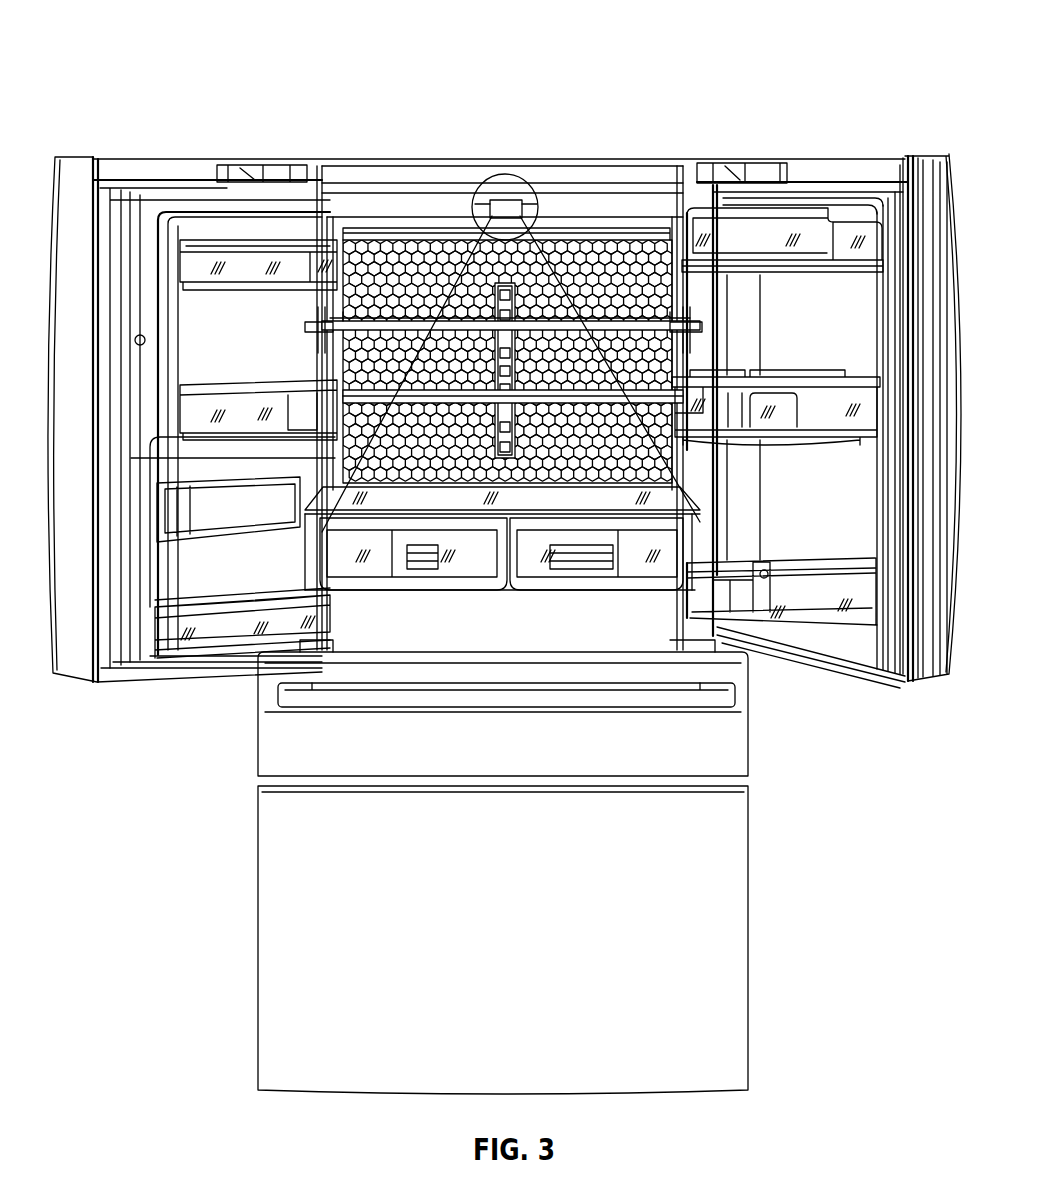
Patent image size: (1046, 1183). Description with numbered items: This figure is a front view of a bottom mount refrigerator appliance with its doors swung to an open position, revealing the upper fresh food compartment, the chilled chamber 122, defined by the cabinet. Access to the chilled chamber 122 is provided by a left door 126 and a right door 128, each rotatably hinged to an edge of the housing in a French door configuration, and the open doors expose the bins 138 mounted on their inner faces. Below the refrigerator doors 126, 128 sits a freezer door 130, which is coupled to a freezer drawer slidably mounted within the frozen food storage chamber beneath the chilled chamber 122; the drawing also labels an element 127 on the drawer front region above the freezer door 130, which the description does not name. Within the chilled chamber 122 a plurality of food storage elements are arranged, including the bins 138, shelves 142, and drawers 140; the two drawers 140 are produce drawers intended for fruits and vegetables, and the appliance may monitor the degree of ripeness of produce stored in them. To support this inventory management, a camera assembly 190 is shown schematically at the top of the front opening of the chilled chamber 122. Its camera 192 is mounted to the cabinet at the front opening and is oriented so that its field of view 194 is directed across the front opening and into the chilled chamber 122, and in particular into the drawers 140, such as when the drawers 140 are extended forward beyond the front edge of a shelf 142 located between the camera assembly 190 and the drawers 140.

The chilled chamber 122 is at (418, 287).
The left door 126 is at (72, 177).
The freezer drawer 127 is at (738, 752).
The right door 128 is at (927, 167).
The freezer door 130 is at (733, 920).
The bins 138 is at (248, 258).
The drawers 140 is at (637, 558).
The shelves 142 is at (678, 498).
The camera assembly 190 is at (515, 170).
The camera 192 is at (519, 202).
The field of view 194 is at (600, 255).